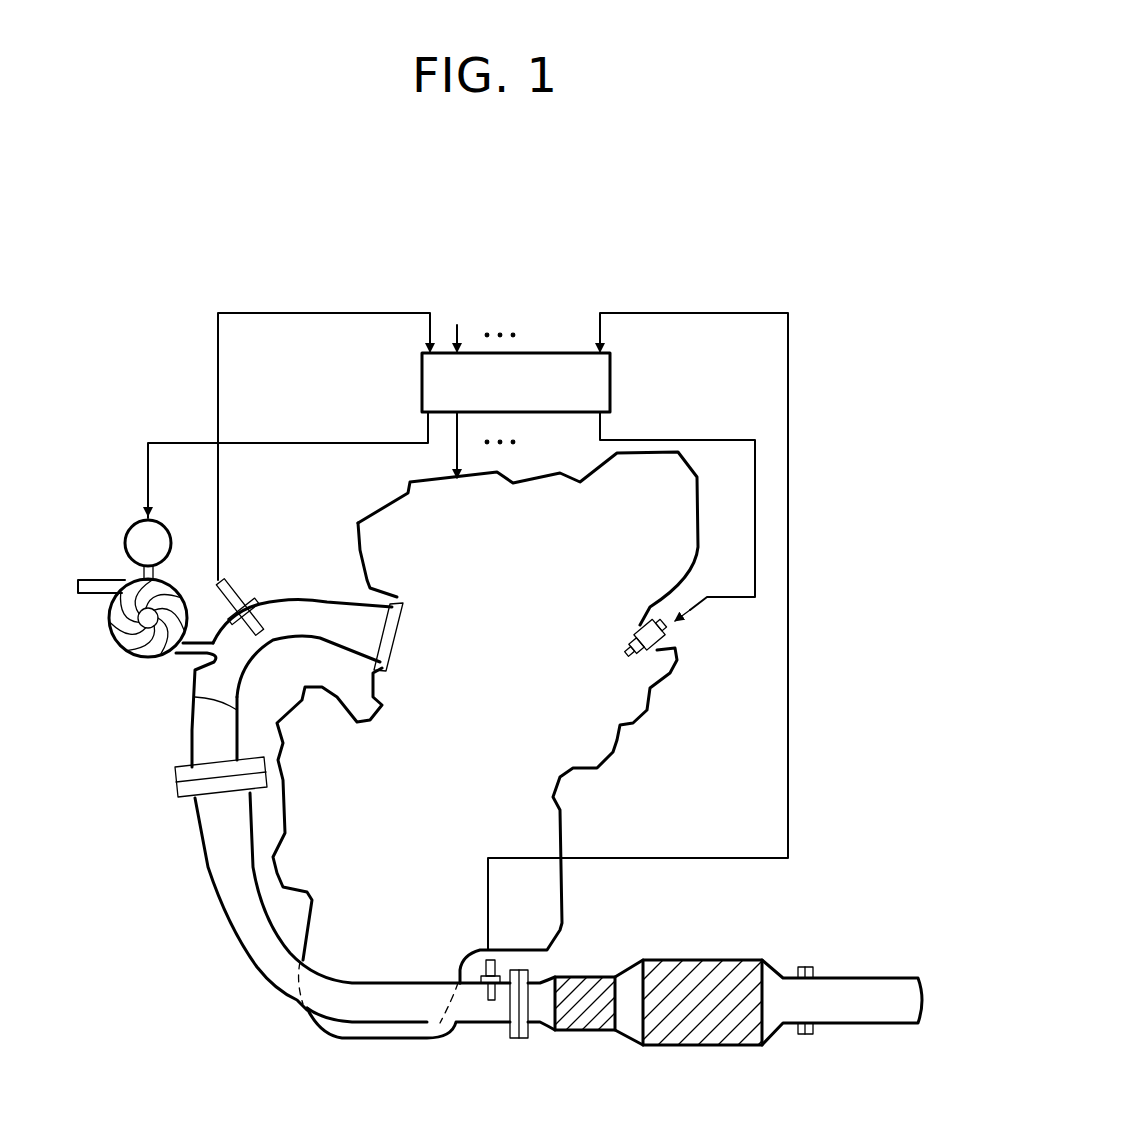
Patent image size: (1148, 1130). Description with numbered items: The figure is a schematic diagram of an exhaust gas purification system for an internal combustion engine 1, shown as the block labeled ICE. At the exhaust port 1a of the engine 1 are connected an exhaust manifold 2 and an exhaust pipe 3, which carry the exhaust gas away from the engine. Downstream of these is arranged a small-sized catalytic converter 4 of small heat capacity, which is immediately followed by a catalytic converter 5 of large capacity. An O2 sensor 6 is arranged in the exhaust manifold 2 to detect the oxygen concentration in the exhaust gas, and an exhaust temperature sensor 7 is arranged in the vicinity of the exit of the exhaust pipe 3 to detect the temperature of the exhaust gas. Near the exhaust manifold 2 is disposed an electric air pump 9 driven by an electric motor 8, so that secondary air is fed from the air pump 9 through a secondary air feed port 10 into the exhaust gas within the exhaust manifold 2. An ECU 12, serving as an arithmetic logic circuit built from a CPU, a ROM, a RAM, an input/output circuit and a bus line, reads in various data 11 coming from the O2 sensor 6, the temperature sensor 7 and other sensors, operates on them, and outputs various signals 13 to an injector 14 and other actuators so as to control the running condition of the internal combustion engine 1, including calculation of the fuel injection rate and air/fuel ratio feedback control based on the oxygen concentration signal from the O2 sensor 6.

The internal combustion engine 1 is at (640, 737).
The exhaust port 1a is at (378, 638).
The exhaust manifold 2 is at (307, 601).
The exhaust pipe 3 is at (228, 935).
The small-sized catalytic converter 4 is at (583, 983).
The catalytic converter 5 is at (700, 967).
The O2 sensor 6 is at (240, 590).
The exhaust temperature sensor 7 is at (490, 950).
The electric motor 8 is at (135, 520).
The electric air pump 9 is at (113, 635).
The secondary air feed port 10 is at (196, 672).
The various data 11 is at (598, 325).
The ECU 12 is at (611, 385).
The various signals 13 is at (600, 430).
The injector 14 is at (673, 628).